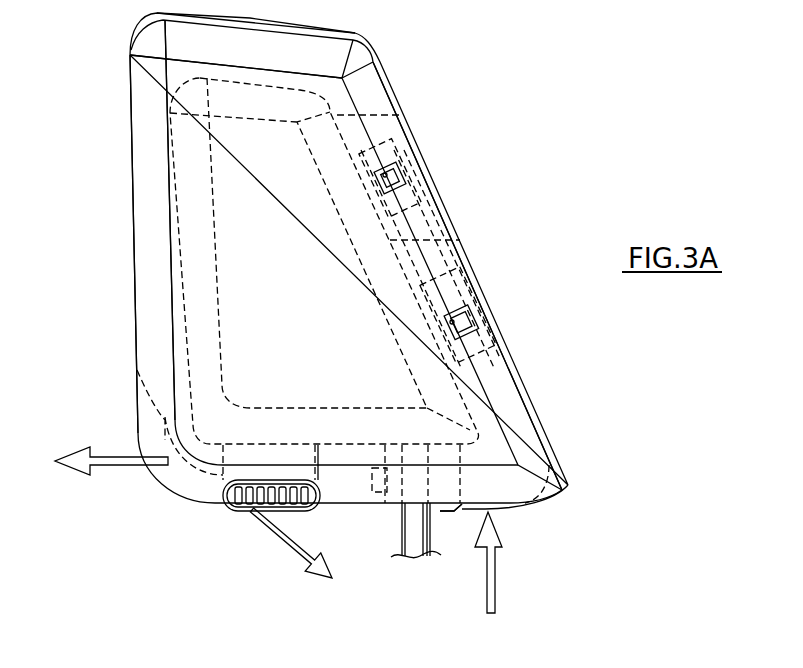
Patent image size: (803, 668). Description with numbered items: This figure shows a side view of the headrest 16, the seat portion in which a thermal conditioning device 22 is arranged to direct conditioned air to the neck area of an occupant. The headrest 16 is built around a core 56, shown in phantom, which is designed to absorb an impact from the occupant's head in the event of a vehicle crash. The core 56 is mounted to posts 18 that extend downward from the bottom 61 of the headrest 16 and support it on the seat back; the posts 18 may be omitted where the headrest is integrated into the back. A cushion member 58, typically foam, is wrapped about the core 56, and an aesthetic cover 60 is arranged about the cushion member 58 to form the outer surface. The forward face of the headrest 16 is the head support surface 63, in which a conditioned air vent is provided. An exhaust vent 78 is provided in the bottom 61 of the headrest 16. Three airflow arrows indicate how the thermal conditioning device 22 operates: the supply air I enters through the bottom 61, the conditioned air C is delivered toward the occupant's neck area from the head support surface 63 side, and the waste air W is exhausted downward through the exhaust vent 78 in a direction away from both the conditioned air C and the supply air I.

The headrest 16 is at (466, 110).
The cushion member 58 is at (367, 97).
The aesthetic cover 60 is at (470, 267).
The head support surface 63 is at (128, 276).
The core 56 is at (370, 218).
The thermal conditioning device 22 is at (486, 336).
The exhaust vent 78 is at (250, 510).
The posts 18 is at (410, 523).
The bottom 61 is at (455, 525).
The conditioned air C is at (108, 467).
The waste air W is at (283, 540).
The supply air I is at (490, 590).